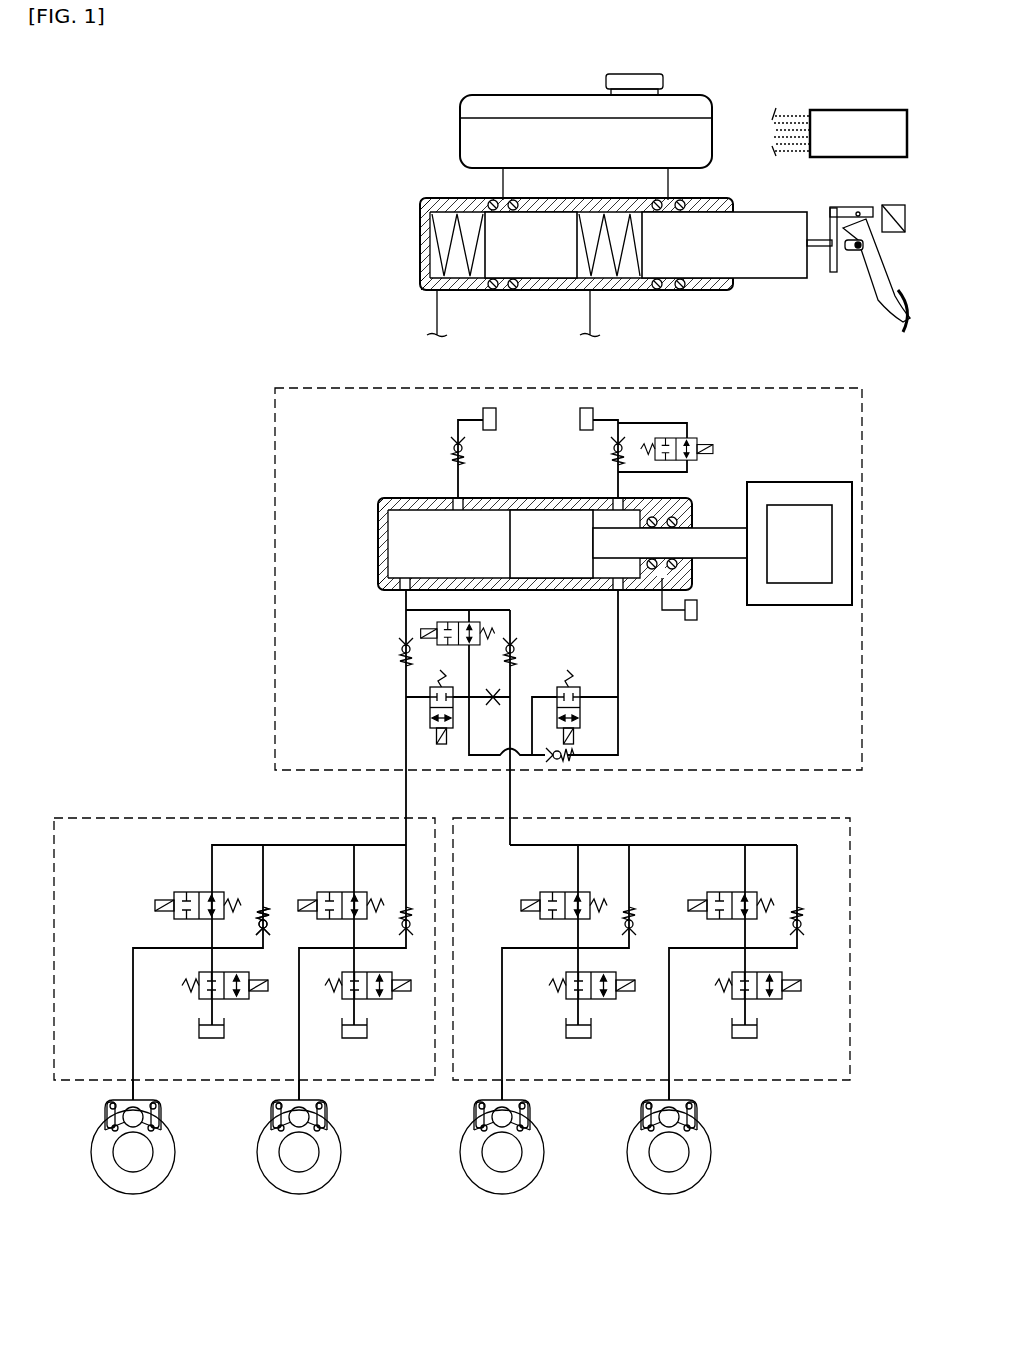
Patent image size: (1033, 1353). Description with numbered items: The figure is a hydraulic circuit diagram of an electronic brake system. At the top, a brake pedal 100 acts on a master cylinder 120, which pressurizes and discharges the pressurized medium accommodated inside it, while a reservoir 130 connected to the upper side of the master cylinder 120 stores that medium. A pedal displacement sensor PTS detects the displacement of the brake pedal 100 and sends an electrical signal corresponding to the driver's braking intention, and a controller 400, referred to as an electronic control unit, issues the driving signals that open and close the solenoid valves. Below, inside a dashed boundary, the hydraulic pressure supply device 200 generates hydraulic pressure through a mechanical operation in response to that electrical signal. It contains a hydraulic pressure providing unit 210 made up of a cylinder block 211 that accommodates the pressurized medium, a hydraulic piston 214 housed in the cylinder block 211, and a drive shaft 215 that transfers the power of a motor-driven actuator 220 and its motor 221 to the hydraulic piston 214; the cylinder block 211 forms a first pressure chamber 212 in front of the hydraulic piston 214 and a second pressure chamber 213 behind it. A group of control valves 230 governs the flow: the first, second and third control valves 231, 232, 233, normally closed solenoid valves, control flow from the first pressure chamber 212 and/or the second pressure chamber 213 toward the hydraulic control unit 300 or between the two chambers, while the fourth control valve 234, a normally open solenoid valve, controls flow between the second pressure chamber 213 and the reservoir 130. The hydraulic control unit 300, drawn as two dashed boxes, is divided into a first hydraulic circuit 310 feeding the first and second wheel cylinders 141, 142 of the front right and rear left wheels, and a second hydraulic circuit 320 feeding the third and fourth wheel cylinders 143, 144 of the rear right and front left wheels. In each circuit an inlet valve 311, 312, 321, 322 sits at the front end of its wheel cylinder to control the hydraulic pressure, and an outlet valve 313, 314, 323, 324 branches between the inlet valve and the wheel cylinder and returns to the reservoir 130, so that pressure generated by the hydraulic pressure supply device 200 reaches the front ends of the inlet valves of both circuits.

The brake pedal 100 is at (876, 262).
The master cylinder 120 is at (420, 217).
The reservoir 130 is at (460, 110).
The controller 400 is at (860, 108).
The pedal displacement sensor PTS is at (905, 211).
The hydraulic pressure supply device 200 is at (275, 519).
The hydraulic pressure providing unit 210 is at (527, 547).
The cylinder block 211 is at (388, 540).
The first pressure chamber 212 is at (406, 546).
The second pressure chamber 213 is at (627, 566).
The hydraulic piston 214 is at (578, 514).
The drive shaft 215 is at (713, 536).
The motor-driven actuator 220 is at (799, 535).
The motor 221 is at (799, 585).
The control valves 230 is at (539, 568).
The first control valve 231 is at (437, 622).
The second control valve 232 is at (430, 721).
The third control valve 233 is at (580, 712).
The fourth control valve 234 is at (694, 437).
The hydraulic control unit 300 is at (864, 814).
The first hydraulic circuit 310 is at (651, 938).
The inlet valve 311 is at (713, 892).
The inlet valve 312 is at (547, 892).
The outlet valve 313 is at (777, 999).
The outlet valve 314 is at (611, 999).
The second hydraulic circuit 320 is at (244, 938).
The inlet valve 321 is at (322, 892).
The inlet valve 322 is at (180, 892).
The outlet valve 323 is at (386, 999).
The outlet valve 324 is at (244, 999).
The first wheel cylinder 141 is at (697, 1108).
The second wheel cylinder 142 is at (530, 1108).
The third wheel cylinder 143 is at (327, 1108).
The fourth wheel cylinder 144 is at (161, 1108).